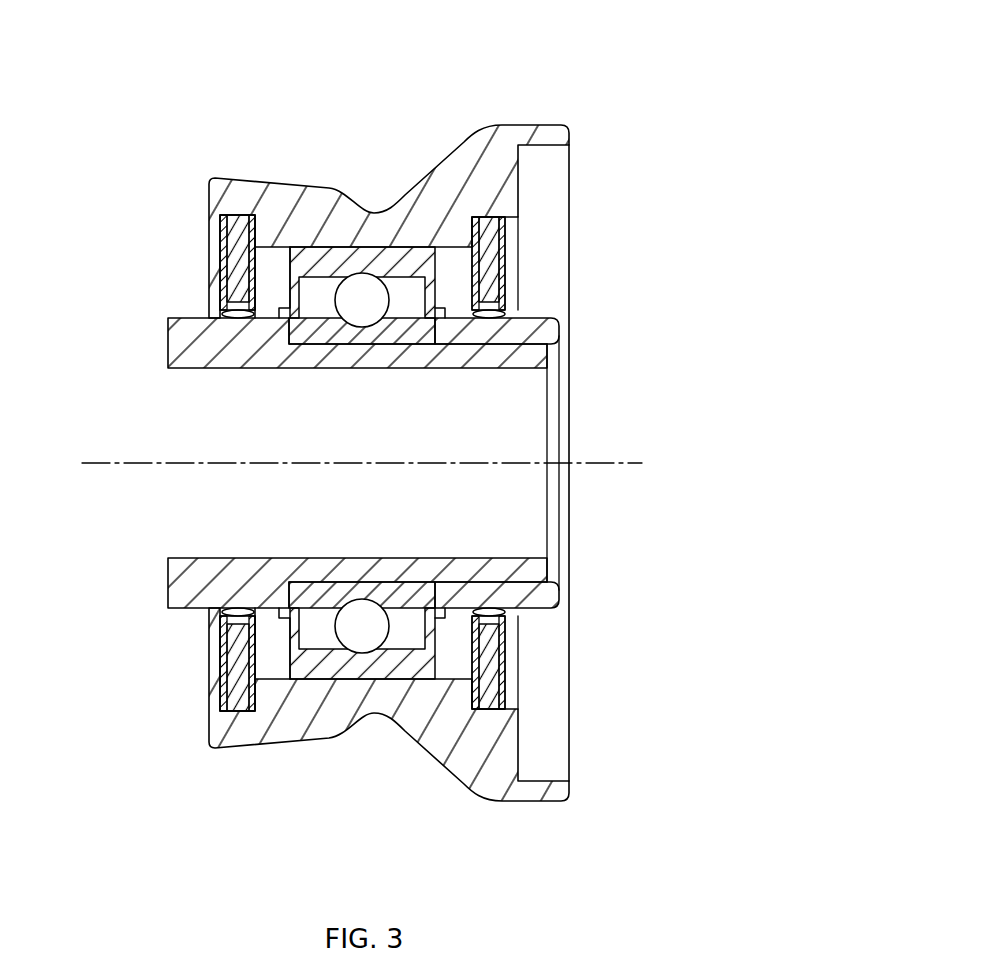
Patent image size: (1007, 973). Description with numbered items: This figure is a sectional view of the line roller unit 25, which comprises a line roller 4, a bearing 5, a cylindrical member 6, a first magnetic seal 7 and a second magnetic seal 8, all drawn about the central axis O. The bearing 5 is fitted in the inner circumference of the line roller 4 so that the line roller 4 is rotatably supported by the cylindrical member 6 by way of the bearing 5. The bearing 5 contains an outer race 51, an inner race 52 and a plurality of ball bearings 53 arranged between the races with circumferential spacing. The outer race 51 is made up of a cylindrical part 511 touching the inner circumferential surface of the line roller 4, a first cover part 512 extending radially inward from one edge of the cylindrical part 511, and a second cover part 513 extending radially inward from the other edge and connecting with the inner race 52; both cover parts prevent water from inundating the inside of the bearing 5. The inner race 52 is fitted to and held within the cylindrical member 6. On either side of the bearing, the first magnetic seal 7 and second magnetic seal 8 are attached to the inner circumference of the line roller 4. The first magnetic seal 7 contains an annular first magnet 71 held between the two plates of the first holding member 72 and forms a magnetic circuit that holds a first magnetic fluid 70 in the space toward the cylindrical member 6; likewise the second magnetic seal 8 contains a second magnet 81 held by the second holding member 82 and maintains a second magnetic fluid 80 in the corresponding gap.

The rotation axis O is at (92, 465).
The line roller 4 is at (496, 126).
The line roller unit 25 is at (593, 107).
The bearing 5 is at (446, 378).
The outer race 51 is at (347, 378).
The cylindrical part 511 is at (318, 258).
The first cover part 512 is at (280, 290).
The second cover part 513 is at (438, 286).
The inner race 52 is at (303, 333).
The ball bearings 53 is at (361, 312).
The cylindrical member 6 is at (166, 343).
The first magnetic seal 7 is at (171, 463).
The first magnetic fluid 70 is at (220, 314).
The first magnet 71 is at (235, 287).
The first holding member 72 is at (253, 272).
The second magnetic seal 8 is at (558, 456).
The second magnetic fluid 80 is at (503, 313).
The second magnet 81 is at (485, 287).
The second holding member 82 is at (480, 274).